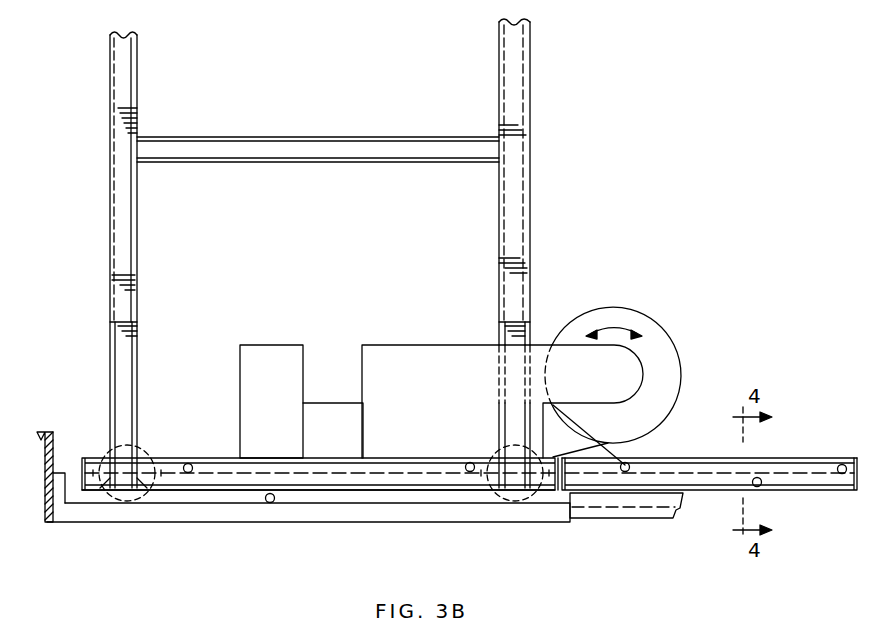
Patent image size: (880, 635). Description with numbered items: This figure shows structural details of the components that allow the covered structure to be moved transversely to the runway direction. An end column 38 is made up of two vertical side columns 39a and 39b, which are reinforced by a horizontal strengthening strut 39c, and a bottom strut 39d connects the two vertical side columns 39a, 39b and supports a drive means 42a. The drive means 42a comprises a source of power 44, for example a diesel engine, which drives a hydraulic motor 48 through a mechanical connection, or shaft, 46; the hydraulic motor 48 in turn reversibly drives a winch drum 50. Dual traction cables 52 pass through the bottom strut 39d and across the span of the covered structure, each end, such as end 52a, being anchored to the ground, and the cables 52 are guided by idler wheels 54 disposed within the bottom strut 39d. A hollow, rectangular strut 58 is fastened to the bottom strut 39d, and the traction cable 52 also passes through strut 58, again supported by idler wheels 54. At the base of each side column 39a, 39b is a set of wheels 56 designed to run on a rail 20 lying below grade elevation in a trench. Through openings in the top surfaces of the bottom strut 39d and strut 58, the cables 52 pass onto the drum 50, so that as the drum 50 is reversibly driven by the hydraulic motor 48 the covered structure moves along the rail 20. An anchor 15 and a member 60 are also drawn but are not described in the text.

The wall 15 is at (48, 430).
The rail 20 is at (470, 522).
The end column 38 is at (540, 113).
The vertical side column 39a is at (492, 195).
The vertical side column 39b is at (137, 233).
The horizontal strengthening strut 39c is at (352, 137).
The bottom strut 39d is at (215, 490).
The drive means 42a is at (350, 311).
The source of power 44 is at (270, 345).
The mechanical connection 46 is at (328, 403).
The hydraulic motor 48 is at (415, 345).
The drum 50 is at (628, 303).
The dual traction cables 52 is at (360, 478).
The end of traction cable 52a is at (63, 475).
The idler wheels 54 is at (188, 463).
The wheels 56 is at (150, 503).
The hollow rectangular strut 58 is at (715, 458).
The support block 60 is at (617, 515).